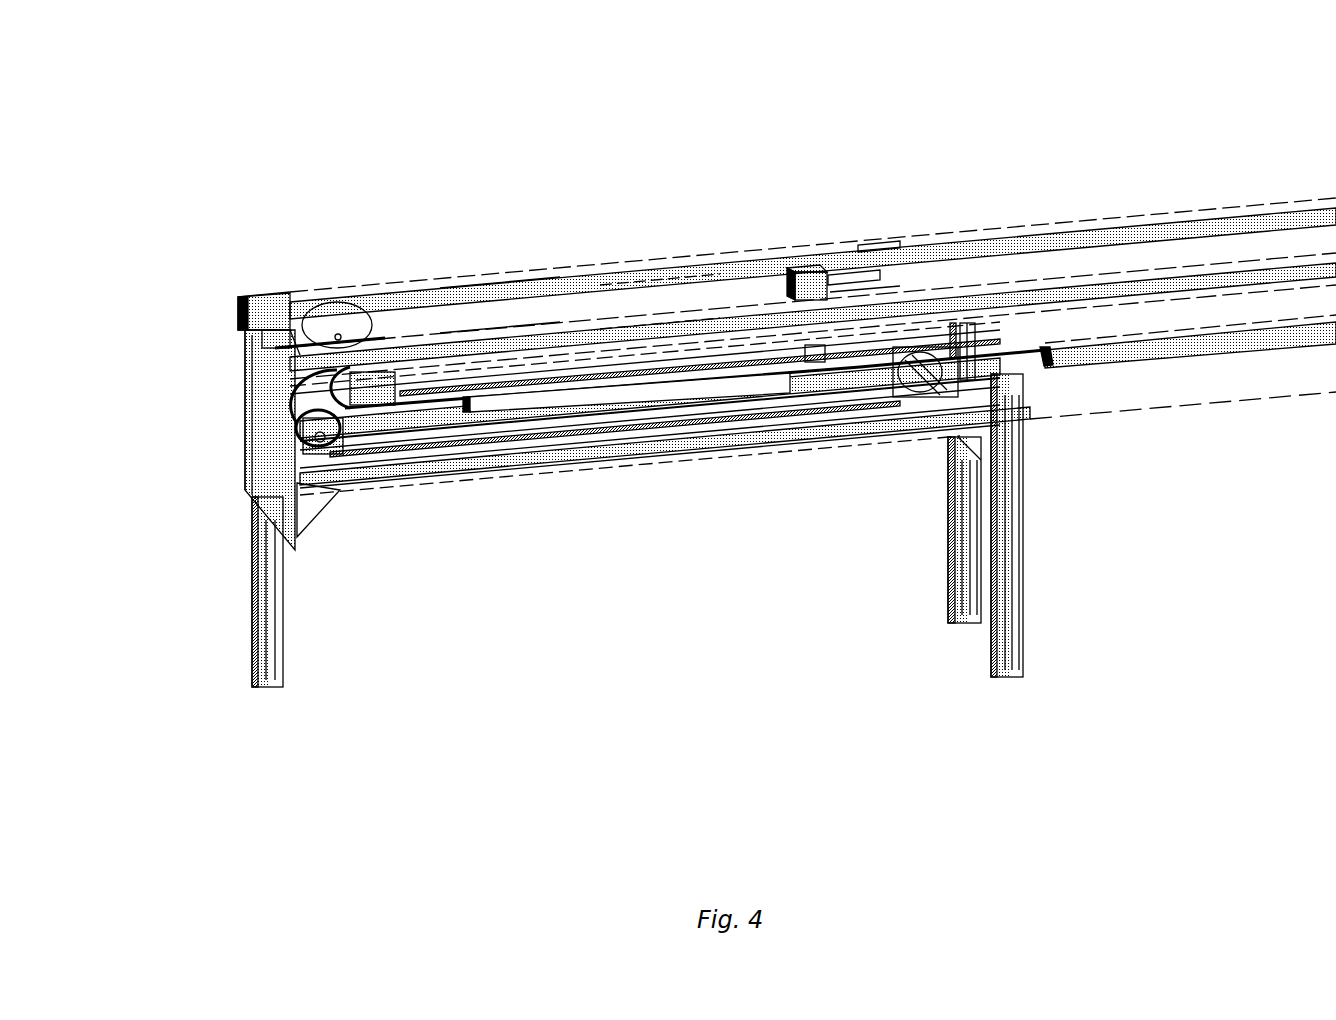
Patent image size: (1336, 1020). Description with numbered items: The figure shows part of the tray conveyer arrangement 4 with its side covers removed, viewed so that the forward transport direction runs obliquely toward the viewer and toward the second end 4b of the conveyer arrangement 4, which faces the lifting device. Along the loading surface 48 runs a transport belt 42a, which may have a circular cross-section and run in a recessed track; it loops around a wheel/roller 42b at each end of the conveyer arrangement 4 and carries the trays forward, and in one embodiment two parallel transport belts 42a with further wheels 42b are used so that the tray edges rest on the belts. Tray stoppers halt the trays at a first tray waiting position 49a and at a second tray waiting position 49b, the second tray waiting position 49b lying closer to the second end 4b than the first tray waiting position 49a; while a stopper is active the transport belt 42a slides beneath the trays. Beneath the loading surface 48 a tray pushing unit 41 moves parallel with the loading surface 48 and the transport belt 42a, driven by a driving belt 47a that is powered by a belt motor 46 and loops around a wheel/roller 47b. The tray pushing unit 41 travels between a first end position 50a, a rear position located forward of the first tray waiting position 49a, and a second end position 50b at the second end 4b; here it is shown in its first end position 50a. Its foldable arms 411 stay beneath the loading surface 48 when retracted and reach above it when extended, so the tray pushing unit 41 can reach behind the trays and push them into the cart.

The conveyer arrangement 4 is at (412, 105).
The second end 4b is at (255, 375).
The tray pushing unit 41 is at (843, 278).
The arms 411 is at (818, 282).
The transport belt 42a is at (503, 327).
The wheel/roller 42b is at (390, 343).
The belt motor 46 is at (943, 393).
The driving belt 47a is at (695, 421).
The wheel/roller 47b is at (347, 423).
The loading surface 48 is at (682, 320).
The first tray waiting position 49a is at (873, 243).
The second tray waiting position 49b is at (257, 310).
The first end position 50a is at (815, 358).
The second end position 50b is at (268, 335).